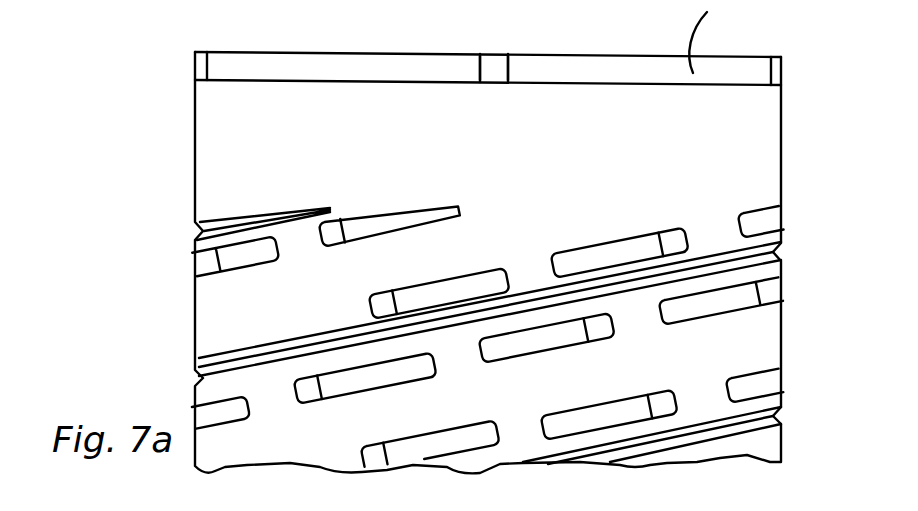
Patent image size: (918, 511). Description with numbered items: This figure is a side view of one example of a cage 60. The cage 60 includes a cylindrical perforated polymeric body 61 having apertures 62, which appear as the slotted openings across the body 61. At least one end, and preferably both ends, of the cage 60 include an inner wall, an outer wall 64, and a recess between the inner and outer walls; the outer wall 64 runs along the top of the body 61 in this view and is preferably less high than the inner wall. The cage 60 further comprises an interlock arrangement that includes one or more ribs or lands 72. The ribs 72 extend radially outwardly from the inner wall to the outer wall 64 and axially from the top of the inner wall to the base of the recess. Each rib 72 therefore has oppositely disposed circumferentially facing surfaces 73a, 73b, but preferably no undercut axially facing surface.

The cage 60 is at (160, 221).
The cylindrical perforated polymeric body 61 is at (766, 327).
The apertures 62 is at (763, 385).
The outer wall 64 is at (303, 98).
The ribs or lands 72 is at (492, 65).
The circumferentially facing surface 73a is at (480, 70).
The circumferentially facing surface 73b is at (508, 76).